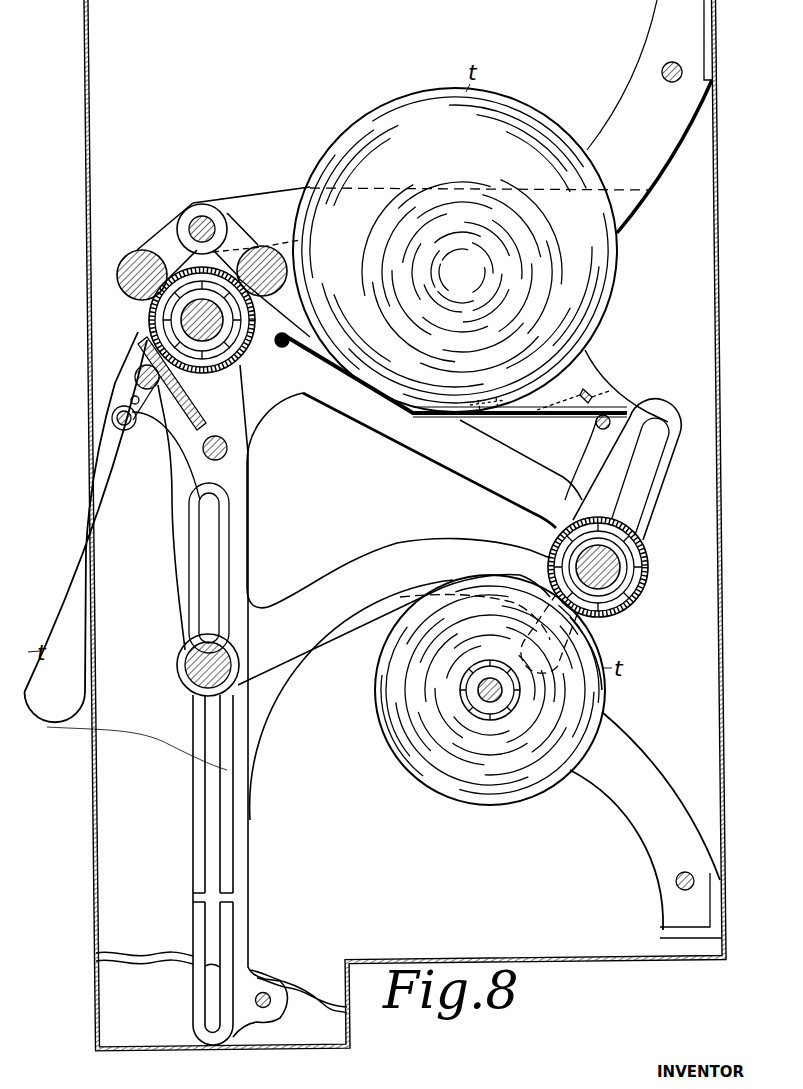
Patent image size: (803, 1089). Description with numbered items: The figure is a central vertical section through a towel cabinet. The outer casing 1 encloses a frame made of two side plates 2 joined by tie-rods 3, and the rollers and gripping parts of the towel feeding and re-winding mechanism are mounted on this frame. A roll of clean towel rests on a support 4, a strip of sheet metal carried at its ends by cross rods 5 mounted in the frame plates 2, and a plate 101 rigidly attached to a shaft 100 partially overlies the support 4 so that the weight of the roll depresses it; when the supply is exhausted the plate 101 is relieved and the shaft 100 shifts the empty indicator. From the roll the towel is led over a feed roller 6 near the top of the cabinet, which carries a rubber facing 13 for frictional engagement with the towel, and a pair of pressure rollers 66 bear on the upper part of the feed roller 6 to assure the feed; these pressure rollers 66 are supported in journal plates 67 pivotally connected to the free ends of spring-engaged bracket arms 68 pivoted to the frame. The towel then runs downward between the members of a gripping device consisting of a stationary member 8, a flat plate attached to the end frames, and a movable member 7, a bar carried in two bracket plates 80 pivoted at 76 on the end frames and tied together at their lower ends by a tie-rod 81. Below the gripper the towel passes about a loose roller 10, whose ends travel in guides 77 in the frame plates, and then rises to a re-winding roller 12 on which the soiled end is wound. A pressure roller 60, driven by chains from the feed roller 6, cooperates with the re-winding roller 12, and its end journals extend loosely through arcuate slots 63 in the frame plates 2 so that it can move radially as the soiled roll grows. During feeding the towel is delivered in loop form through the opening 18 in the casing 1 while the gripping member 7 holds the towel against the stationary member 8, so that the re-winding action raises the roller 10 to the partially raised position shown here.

The outer casing 1 is at (93, 806).
The side plate 2 is at (249, 915).
The tie-rod 3 is at (661, 72).
The support 4 is at (370, 388).
The cross rod 5 is at (287, 348).
The feed roller 6 is at (165, 320).
The movable gripping member 7 is at (135, 378).
The stationary gripping member 8 is at (142, 358).
The loose roller 10 is at (186, 666).
The re-winding roller 12 is at (478, 700).
The rubber facing 13 is at (231, 354).
The opening 18 is at (115, 420).
The pressure roller 60 is at (647, 587).
The arcuate slot 63 is at (637, 503).
The pressure roller 66 is at (135, 258).
The journal plate 67 is at (172, 240).
The bracket arm 68 is at (250, 208).
The pivot support 76 is at (130, 402).
The guide 77 is at (212, 832).
The bracket plate 80 is at (131, 398).
The tie-rod 81 is at (127, 430).
The shaft 100 is at (597, 392).
The plate 101 is at (480, 402).